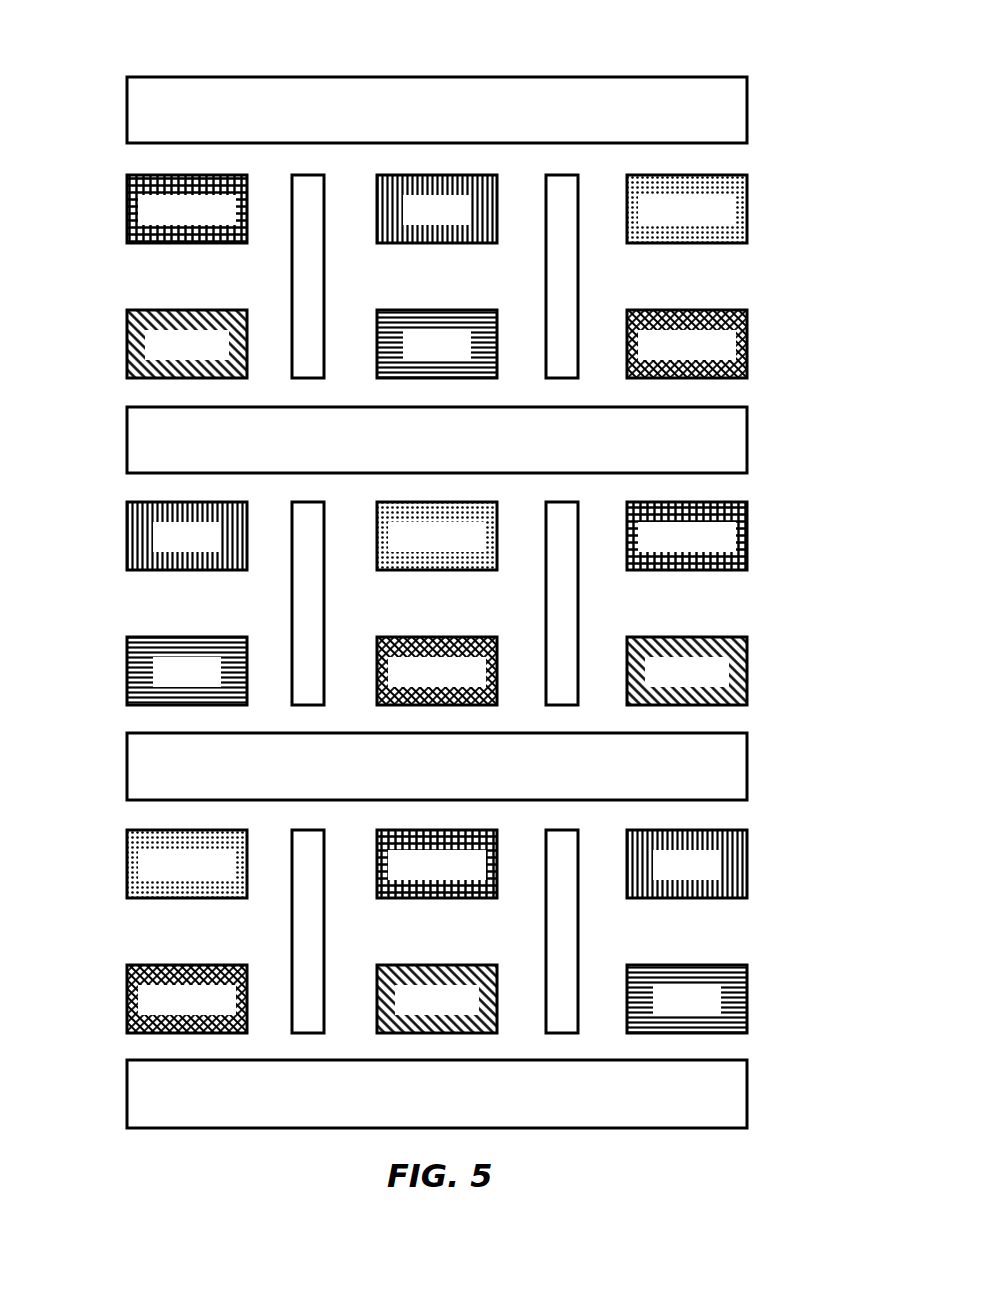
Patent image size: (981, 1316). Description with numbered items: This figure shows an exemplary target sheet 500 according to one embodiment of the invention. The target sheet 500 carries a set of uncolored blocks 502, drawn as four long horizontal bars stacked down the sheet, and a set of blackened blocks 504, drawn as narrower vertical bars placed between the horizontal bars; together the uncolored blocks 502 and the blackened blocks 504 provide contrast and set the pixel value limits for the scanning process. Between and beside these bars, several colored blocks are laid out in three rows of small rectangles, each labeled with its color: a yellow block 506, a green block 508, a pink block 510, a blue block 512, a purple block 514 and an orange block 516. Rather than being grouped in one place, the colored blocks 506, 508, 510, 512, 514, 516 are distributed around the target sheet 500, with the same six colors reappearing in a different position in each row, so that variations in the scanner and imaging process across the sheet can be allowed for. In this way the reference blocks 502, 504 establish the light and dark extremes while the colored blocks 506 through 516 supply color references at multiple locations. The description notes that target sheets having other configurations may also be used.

The target sheet 500 is at (706, 40).
The uncolored blocks 502 is at (747, 108).
The blackened blocks 504 is at (292, 295).
The yellow block 506 is at (127, 210).
The green block 508 is at (127, 345).
The pink block 510 is at (450, 243).
The blue block 512 is at (440, 310).
The purple block 514 is at (747, 203).
The orange block 516 is at (747, 340).